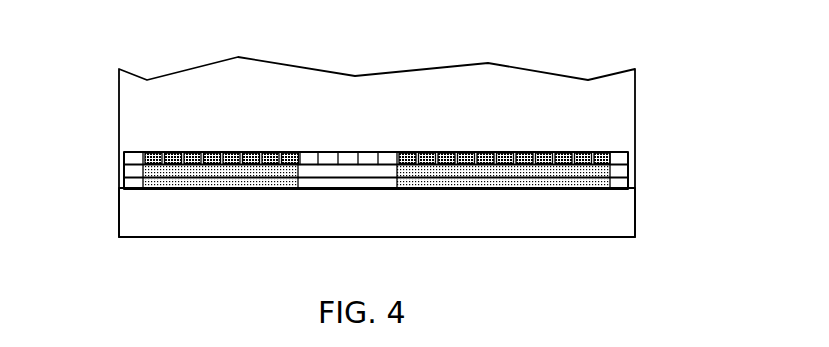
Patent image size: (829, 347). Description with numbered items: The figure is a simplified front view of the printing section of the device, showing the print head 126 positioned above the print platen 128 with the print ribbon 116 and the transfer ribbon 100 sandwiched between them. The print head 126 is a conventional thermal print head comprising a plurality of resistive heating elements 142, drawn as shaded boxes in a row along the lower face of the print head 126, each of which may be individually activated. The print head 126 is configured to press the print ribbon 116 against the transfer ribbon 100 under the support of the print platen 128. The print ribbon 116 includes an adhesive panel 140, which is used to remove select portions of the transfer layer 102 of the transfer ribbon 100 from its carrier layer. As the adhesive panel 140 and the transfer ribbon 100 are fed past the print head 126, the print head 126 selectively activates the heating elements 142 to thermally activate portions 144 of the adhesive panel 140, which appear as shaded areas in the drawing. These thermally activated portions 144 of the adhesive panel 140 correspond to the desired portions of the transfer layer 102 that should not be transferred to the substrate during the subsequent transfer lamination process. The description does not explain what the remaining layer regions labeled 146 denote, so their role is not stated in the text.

The transfer ribbon 100 is at (369, 189).
The transfer layer 102 is at (133, 181).
The print ribbon 116 is at (425, 135).
The print head 126 is at (542, 83).
The print platen 128 is at (128, 216).
The adhesive panel 140 is at (413, 167).
The heating elements 142 is at (175, 152).
The thermally activated portions 144 is at (185, 170).
The adhesive layer 146 is at (255, 183).